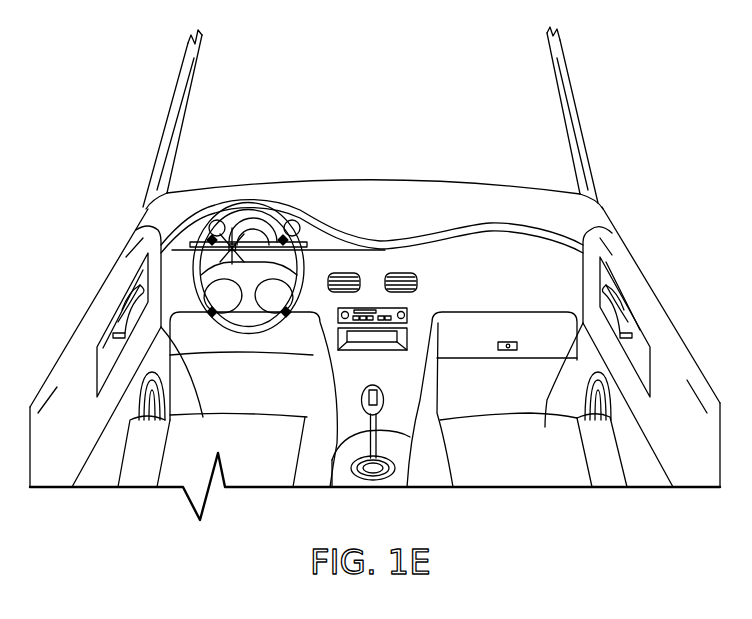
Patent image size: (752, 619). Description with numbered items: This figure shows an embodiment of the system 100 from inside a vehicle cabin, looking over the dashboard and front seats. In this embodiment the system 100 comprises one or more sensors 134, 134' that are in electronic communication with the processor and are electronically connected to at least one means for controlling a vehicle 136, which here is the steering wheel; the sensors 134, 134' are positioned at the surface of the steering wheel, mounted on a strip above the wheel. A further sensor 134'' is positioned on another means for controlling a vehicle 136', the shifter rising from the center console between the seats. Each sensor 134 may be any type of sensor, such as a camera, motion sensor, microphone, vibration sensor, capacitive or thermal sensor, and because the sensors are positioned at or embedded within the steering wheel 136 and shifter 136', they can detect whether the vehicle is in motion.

The system 100 is at (380, 156).
The sensor 134 is at (248, 199).
The sensor 134' is at (284, 181).
The sensor 134'' is at (441, 422).
The means for controlling a vehicle 136 is at (175, 268).
The means for controlling a vehicle 136' is at (354, 470).